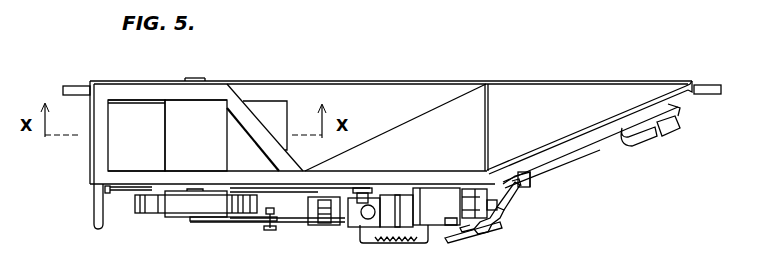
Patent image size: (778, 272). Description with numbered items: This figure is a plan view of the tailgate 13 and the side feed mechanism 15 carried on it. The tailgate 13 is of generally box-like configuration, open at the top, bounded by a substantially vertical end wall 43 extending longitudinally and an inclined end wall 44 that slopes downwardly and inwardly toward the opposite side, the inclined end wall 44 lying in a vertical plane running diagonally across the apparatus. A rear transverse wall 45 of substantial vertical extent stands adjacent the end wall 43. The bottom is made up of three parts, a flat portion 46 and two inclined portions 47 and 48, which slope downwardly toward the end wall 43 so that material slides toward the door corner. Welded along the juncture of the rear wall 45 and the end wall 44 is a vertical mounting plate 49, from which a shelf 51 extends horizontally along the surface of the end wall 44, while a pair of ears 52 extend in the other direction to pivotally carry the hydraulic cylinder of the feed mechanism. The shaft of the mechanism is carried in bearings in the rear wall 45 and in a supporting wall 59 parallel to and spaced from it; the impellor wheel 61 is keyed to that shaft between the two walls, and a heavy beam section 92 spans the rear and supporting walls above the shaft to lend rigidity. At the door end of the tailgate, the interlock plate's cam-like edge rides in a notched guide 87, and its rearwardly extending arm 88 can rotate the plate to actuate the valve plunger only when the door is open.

The tailgate 13 is at (368, 98).
The side feed mechanism 15 is at (292, 224).
The end wall 43 is at (97, 158).
The inclined end wall 44 is at (597, 128).
The rear transverse wall 45 is at (237, 176).
The flat portion 46 is at (448, 81).
The inclined portion 47 is at (473, 103).
The inclined portion 48 is at (550, 87).
The mounting plate 49 is at (480, 205).
The shelf 51 is at (566, 172).
The ears 52 is at (477, 193).
The supporting wall 59 is at (140, 88).
The impellor wheel 61 is at (279, 104).
The notched guide 87 is at (108, 193).
The arm 88 is at (94, 217).
The heavy beam section 92 is at (165, 148).